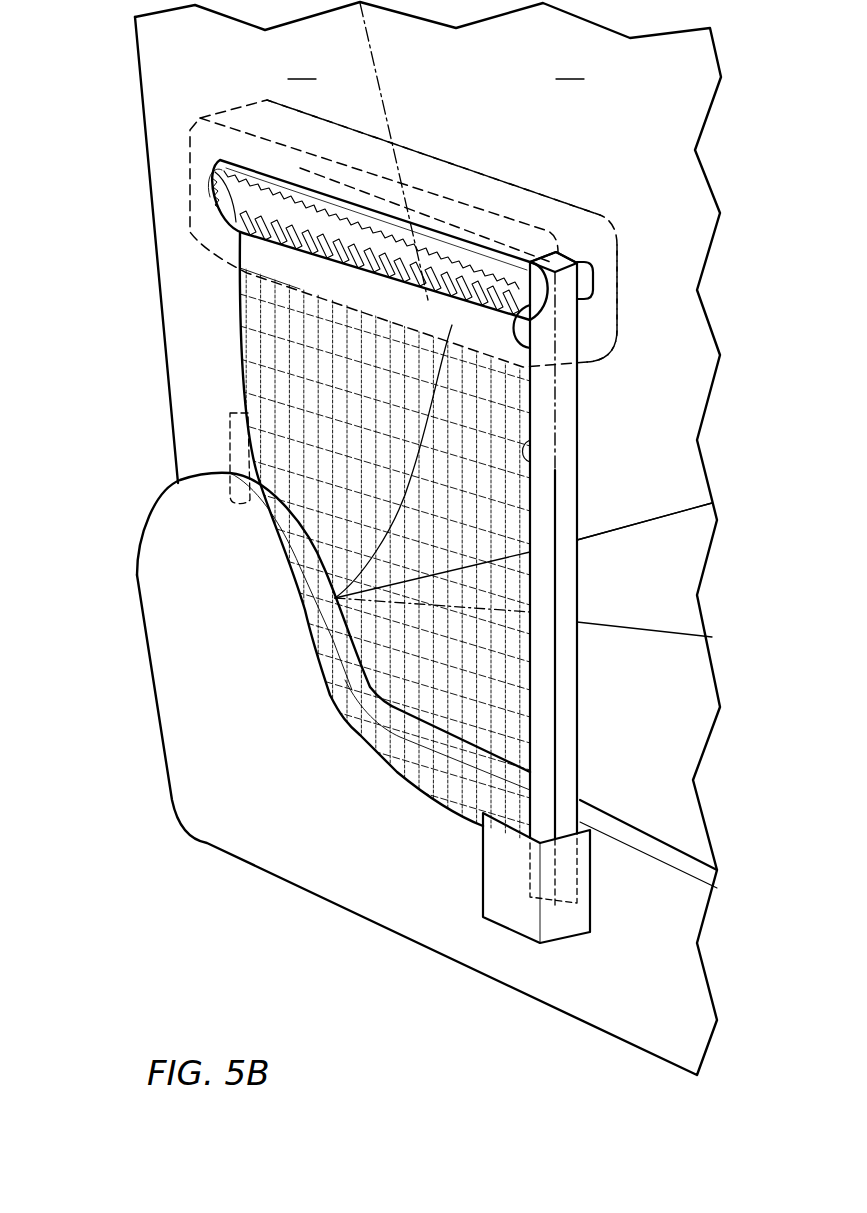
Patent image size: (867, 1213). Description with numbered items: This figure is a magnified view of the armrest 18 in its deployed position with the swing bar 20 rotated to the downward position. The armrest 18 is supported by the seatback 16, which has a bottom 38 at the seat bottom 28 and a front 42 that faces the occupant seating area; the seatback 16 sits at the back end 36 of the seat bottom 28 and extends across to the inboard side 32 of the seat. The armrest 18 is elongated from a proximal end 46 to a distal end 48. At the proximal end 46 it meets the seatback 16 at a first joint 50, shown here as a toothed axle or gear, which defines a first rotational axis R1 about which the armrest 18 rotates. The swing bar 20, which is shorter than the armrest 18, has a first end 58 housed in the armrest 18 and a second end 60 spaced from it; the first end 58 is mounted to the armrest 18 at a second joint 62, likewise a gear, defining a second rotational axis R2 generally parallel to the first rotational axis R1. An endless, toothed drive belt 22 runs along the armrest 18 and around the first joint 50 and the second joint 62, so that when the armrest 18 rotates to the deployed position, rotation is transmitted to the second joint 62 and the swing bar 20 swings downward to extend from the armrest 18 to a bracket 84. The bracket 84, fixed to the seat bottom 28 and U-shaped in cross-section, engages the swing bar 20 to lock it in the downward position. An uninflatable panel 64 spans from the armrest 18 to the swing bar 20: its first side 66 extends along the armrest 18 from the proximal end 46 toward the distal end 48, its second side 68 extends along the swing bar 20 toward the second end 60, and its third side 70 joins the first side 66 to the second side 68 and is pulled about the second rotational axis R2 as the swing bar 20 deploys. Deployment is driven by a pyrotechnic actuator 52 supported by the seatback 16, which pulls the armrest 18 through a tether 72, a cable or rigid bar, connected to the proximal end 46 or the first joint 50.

The seatback 16 is at (390, 87).
The armrest 18 is at (508, 183).
The swing bar 20 is at (579, 436).
The drive belt 22 is at (468, 240).
The seat bottom 28 is at (645, 628).
The inboard side 32 is at (302, 67).
The back end 36 is at (606, 537).
The bottom 38 is at (650, 522).
The front 42 is at (570, 67).
The proximal end 46 is at (195, 114).
The distal end 48 is at (625, 311).
The first joint 50 is at (215, 188).
The pyrotechnic actuator 52 is at (228, 440).
The first end 58 is at (560, 252).
The second end 60 is at (565, 905).
The second joint 62 is at (577, 363).
The panel 64 is at (320, 677).
The first side 66 is at (398, 333).
The second side 68 is at (532, 452).
The third side 70 is at (352, 730).
The tether 72 is at (233, 312).
The bracket 84 is at (590, 893).
The first rotational axis R1 is at (222, 198).
The second rotational axis R2 is at (594, 274).